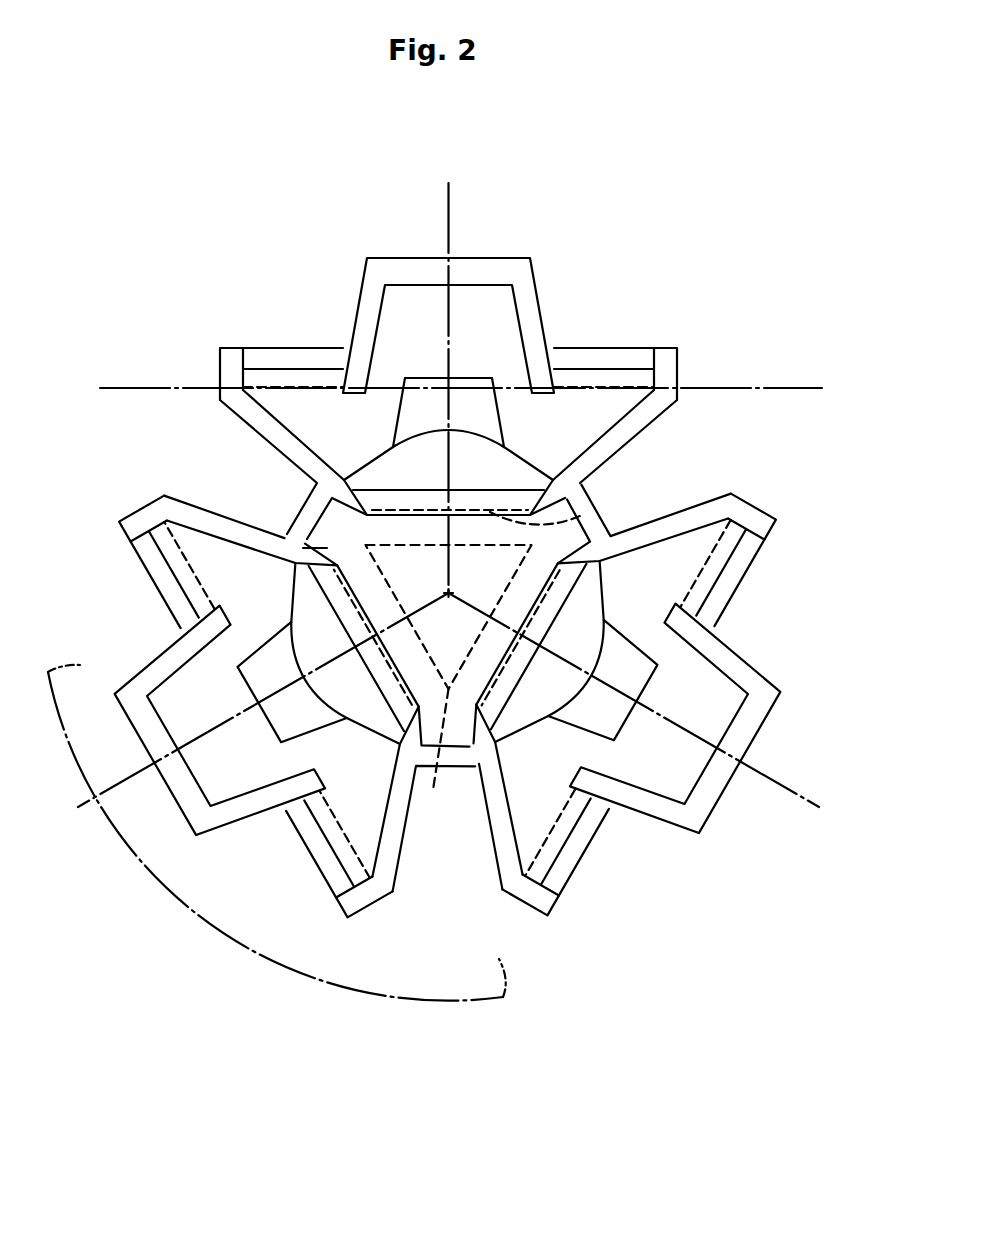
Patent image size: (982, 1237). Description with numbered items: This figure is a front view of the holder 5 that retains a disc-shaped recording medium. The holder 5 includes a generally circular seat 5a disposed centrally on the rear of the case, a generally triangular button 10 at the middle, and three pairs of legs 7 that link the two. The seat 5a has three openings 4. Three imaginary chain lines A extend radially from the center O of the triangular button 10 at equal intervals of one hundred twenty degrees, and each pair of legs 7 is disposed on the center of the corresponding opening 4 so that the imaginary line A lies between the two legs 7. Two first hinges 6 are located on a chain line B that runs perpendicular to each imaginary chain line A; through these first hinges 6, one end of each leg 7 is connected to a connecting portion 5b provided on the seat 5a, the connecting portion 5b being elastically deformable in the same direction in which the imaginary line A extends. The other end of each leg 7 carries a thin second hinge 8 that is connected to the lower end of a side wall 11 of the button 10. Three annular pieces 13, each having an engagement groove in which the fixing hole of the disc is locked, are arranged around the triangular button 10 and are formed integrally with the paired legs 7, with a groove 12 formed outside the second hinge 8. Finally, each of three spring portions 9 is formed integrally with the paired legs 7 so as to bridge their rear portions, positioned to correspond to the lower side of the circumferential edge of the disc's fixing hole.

The opening 4 is at (150, 670).
The holder 5 is at (762, 322).
The seat 5a is at (404, 998).
The connecting portion 5b is at (327, 377).
The first hinge 6 is at (268, 390).
The leg 7 is at (303, 407).
The second hinge 8 is at (580, 516).
The spring portion 9 is at (412, 300).
The triangular button 10 is at (367, 545).
The side wall 11 is at (433, 758).
The groove 12 is at (530, 500).
The annular piece 13 is at (393, 467).
The imaginary chain line A is at (452, 211).
The chain line B is at (807, 387).
The center O is at (450, 594).